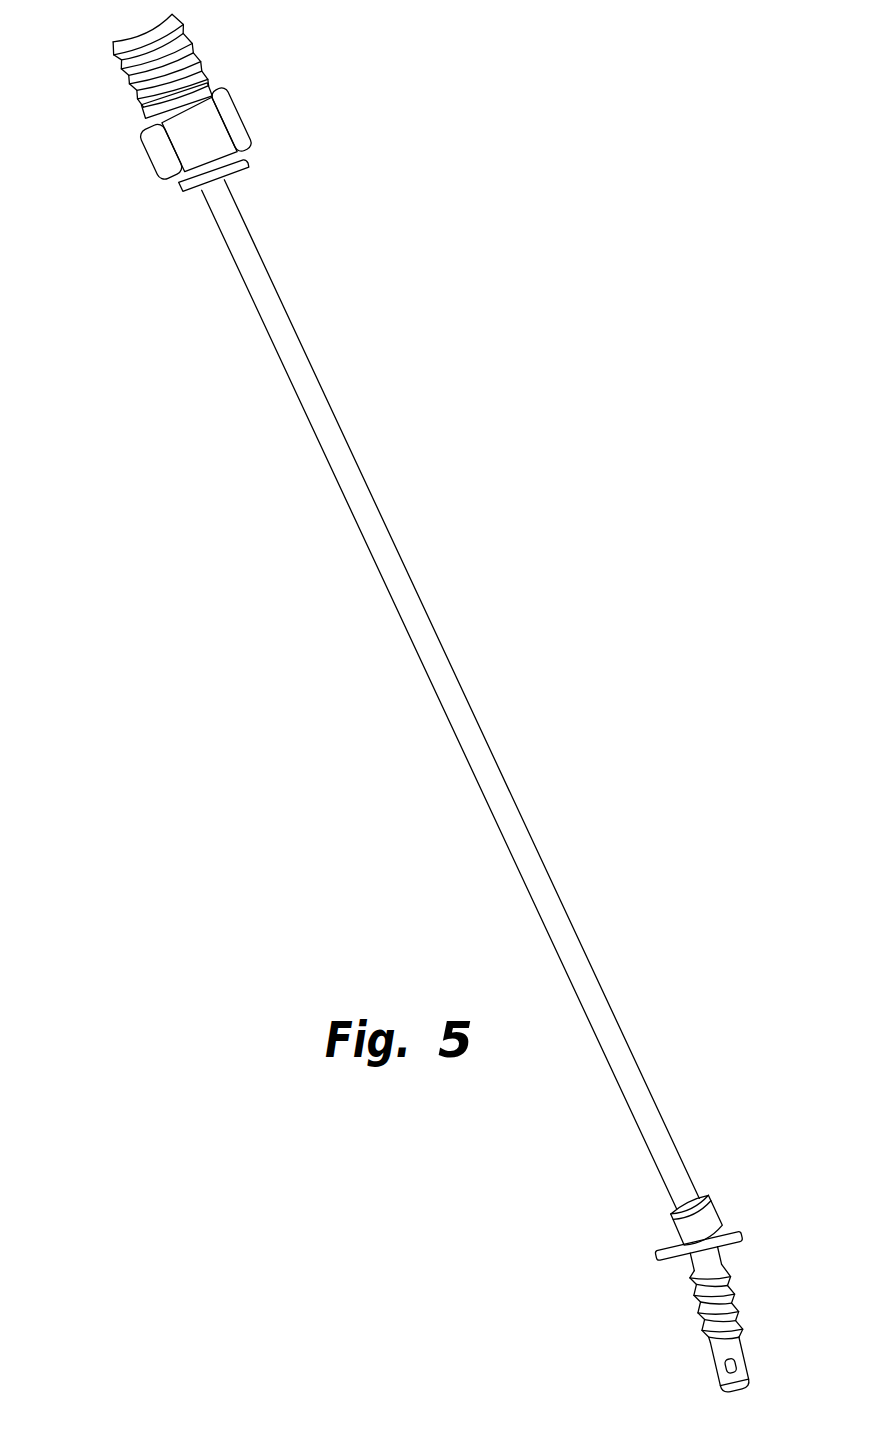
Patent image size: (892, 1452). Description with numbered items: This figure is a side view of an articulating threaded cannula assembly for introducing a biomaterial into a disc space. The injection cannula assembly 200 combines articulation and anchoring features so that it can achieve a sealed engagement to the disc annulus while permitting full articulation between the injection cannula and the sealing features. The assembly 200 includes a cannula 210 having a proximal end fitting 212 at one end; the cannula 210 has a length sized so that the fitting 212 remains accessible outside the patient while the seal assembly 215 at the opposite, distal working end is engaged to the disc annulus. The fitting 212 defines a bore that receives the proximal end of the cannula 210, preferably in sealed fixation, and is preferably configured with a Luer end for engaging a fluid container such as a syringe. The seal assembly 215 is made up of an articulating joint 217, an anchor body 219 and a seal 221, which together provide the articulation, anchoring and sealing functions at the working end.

The injection cannula assembly 200 is at (477, 782).
The cannula 210 is at (357, 474).
The proximal end fitting 212 is at (143, 163).
The seal assembly 215 is at (626, 1261).
The articulating joint 217 is at (716, 1212).
The anchor body 219 is at (742, 1303).
The seal 221 is at (743, 1237).